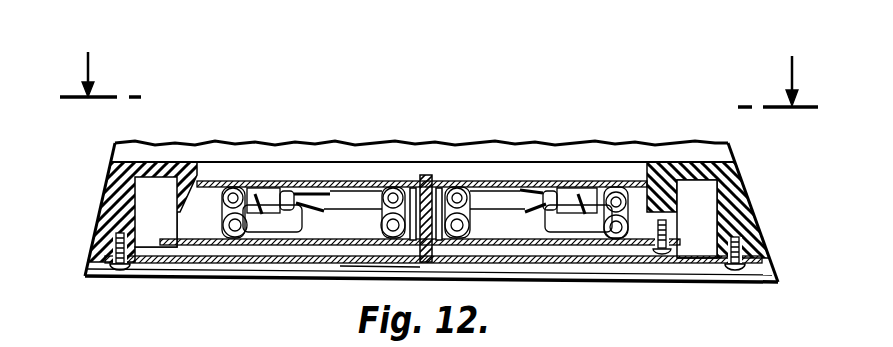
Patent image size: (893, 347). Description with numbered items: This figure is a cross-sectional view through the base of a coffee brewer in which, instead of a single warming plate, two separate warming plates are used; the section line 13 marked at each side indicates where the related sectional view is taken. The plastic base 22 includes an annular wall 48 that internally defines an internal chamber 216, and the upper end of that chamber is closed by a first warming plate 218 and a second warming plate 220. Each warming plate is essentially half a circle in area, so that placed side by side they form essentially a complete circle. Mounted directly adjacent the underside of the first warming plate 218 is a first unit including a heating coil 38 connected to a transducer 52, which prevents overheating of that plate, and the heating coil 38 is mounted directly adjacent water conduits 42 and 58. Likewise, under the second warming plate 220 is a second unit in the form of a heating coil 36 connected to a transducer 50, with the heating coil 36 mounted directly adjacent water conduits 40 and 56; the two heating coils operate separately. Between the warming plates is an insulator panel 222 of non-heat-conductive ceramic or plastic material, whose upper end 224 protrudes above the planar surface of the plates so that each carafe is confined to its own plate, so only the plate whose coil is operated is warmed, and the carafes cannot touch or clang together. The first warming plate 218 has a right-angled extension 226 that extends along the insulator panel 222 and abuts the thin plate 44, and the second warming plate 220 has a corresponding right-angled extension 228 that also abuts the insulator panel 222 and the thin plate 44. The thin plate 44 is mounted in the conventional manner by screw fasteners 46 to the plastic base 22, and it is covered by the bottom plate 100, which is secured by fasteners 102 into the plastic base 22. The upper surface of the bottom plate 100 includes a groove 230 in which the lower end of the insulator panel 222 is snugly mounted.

The section line 13- 13 is at (439, 66).
The plastic base 22 is at (102, 215).
The heating coil 36 is at (490, 164).
The heating coil 38 is at (232, 185).
The water conduit 40 is at (640, 257).
The water conduit 42 is at (233, 246).
The thin plate 44 is at (431, 306).
The screw fasteners 46 is at (690, 265).
The annular wall 48 is at (160, 278).
The transducer 50 is at (612, 192).
The transducer 52 is at (268, 182).
The water discharging conduit 56 is at (548, 262).
The water discharging conduit 58 is at (330, 263).
The bottom plate 100 is at (625, 262).
The fasteners 102 is at (110, 248).
The internal chamber 216 is at (673, 212).
The first warming plate 218 is at (313, 186).
The second warming plate 220 is at (553, 190).
The insulator panel 222 is at (446, 190).
The upper end 224 is at (426, 175).
The right-angled extension 226 is at (385, 268).
The right-angled extension 228 is at (480, 250).
The groove 230 is at (466, 262).